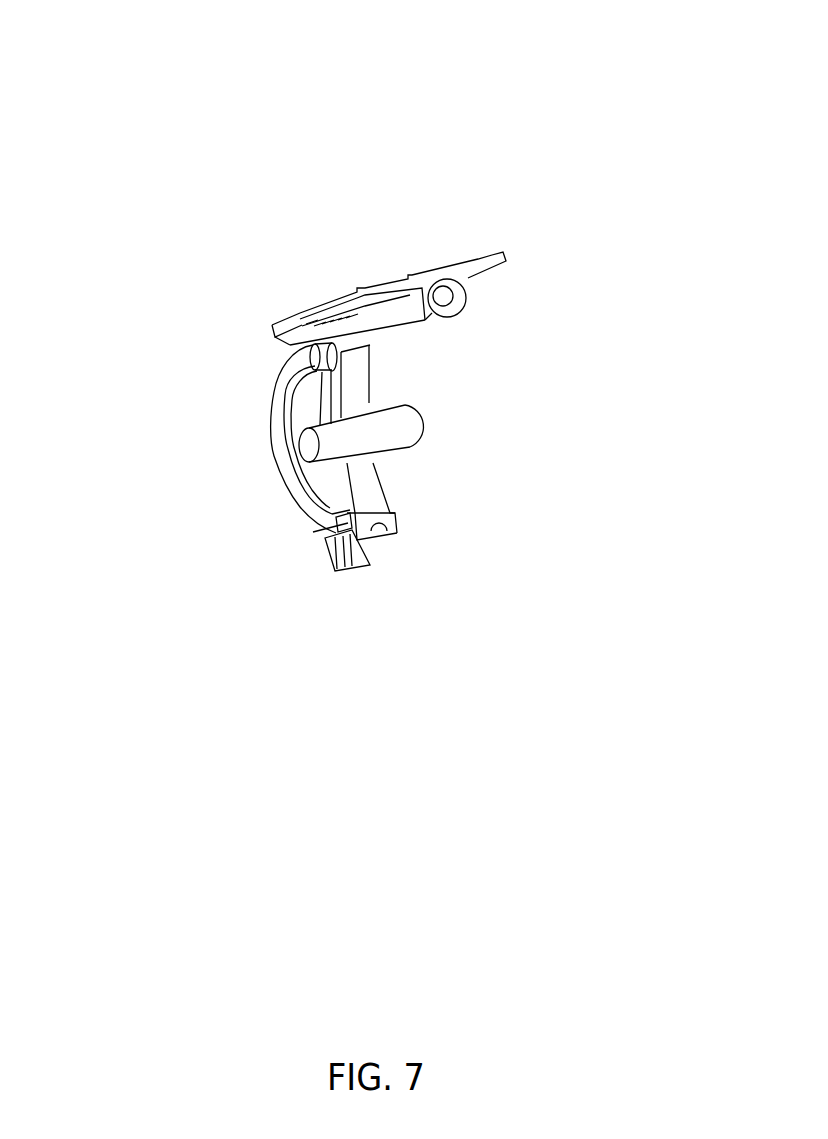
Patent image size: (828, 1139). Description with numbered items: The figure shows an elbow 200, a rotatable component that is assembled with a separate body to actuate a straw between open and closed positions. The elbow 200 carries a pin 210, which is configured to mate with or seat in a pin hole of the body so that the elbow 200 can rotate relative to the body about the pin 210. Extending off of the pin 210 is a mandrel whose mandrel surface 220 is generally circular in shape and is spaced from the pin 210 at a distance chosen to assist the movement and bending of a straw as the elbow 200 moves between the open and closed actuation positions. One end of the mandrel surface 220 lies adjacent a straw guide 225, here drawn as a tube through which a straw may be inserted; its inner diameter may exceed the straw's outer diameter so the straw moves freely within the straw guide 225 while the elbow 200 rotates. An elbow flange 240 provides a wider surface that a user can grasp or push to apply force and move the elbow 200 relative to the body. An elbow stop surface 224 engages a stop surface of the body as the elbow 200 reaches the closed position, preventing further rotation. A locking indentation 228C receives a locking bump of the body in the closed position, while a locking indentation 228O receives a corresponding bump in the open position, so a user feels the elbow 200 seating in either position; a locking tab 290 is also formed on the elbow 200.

The elbow 200 is at (138, 175).
The elbow flange 240 is at (490, 262).
The straw guide 225 is at (446, 297).
The elbow stop surface 224 is at (355, 387).
The pin 210 is at (382, 428).
The mandrel surface 220 is at (273, 437).
The locking indentation 228C is at (312, 357).
The locking indentation 228O is at (342, 528).
The locking tab 290 is at (360, 552).